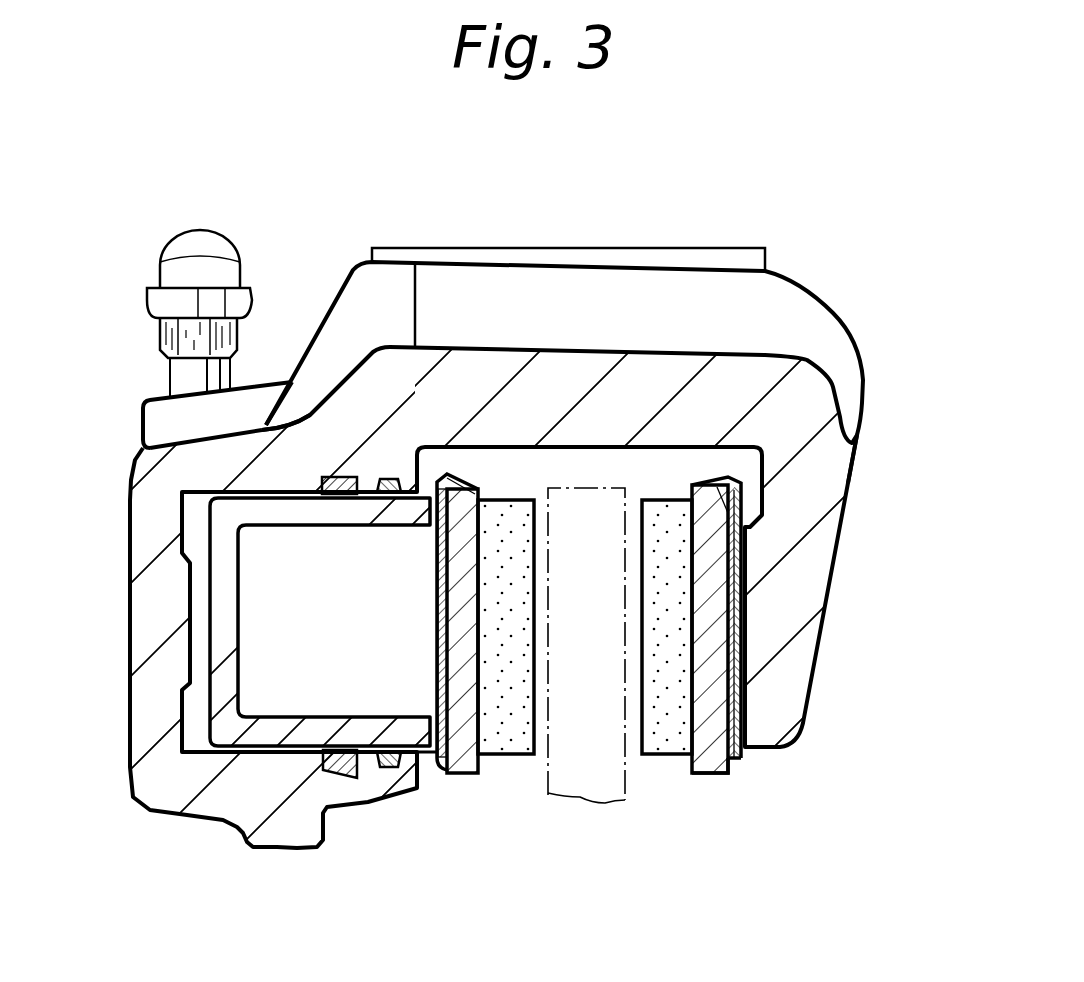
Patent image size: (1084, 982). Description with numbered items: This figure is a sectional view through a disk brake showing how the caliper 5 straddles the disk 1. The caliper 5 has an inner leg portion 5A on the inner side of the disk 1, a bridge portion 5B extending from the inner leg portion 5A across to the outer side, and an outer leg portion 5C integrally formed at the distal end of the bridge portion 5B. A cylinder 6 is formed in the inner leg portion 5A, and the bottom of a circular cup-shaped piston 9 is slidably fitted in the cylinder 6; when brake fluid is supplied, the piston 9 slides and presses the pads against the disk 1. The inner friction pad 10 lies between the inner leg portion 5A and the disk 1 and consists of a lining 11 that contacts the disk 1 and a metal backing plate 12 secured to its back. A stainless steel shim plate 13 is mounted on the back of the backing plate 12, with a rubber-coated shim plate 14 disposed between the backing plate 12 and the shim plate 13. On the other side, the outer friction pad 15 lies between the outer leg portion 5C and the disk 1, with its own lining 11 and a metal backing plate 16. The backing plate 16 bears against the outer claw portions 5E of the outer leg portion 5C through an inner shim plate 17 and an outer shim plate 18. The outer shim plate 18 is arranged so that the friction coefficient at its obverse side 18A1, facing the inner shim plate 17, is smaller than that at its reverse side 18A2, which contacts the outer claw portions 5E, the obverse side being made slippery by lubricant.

The disk 1 is at (603, 807).
The caliper 5 is at (813, 313).
The inner leg portion 5A is at (322, 447).
The bridge portion 5B is at (560, 288).
The outer leg portion 5C is at (825, 487).
The outer claw portions 5E is at (797, 657).
The cylinder 6 is at (318, 737).
The piston 9 is at (260, 735).
The inner friction pad 10 is at (486, 756).
The lining 11 is at (520, 743).
The backing plate 12 is at (465, 775).
The shim plate 13 is at (437, 758).
The shim plate 14 is at (446, 782).
The outer friction pad 15 is at (728, 774).
The backing plate 16 is at (710, 777).
The inner shim plate 17 is at (743, 727).
The outer shim plate 18 is at (743, 685).
The obverse side 18A1 is at (735, 625).
The reverse side 18A2 is at (735, 578).